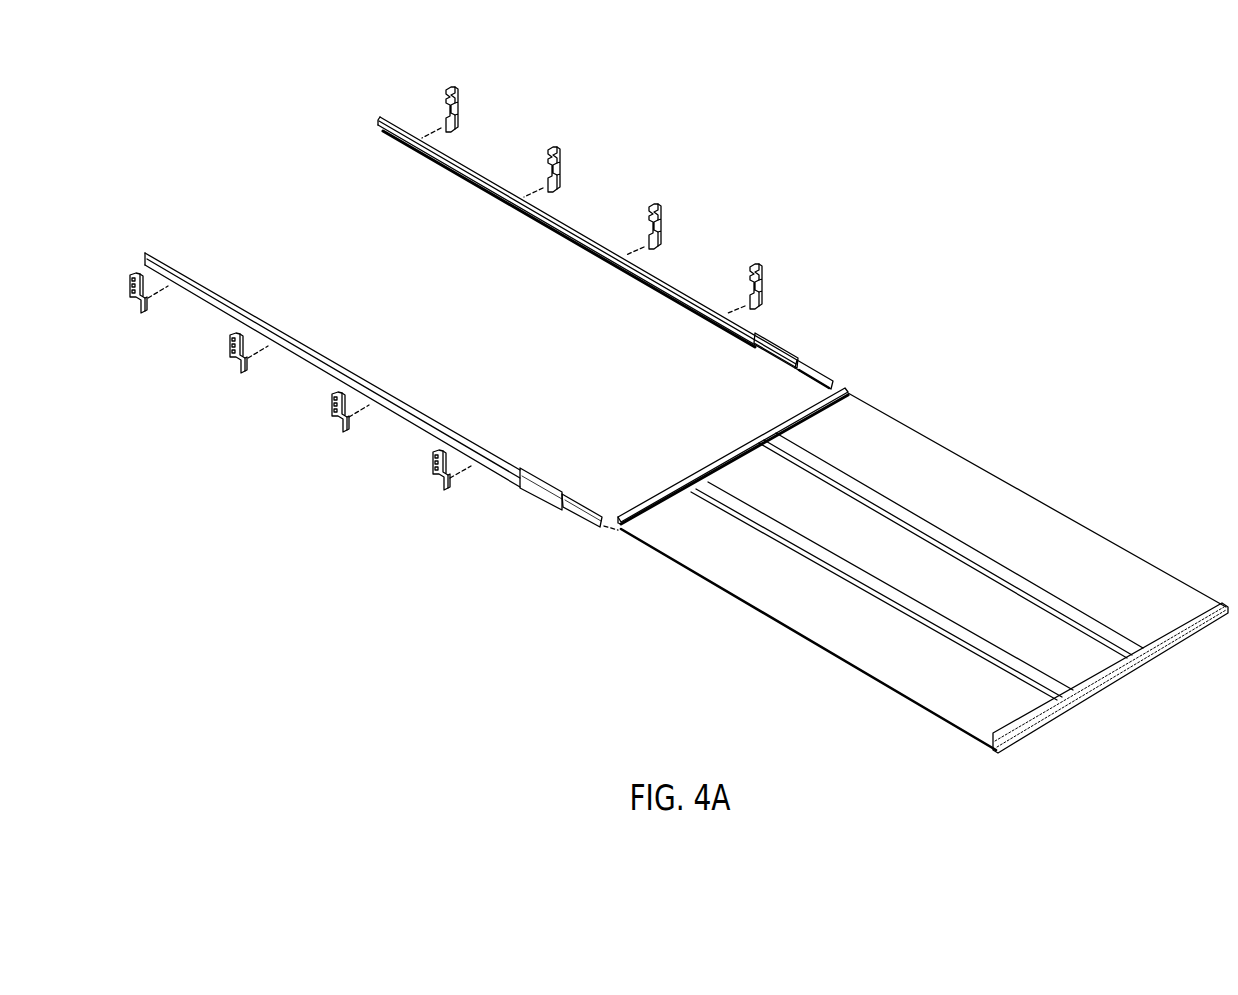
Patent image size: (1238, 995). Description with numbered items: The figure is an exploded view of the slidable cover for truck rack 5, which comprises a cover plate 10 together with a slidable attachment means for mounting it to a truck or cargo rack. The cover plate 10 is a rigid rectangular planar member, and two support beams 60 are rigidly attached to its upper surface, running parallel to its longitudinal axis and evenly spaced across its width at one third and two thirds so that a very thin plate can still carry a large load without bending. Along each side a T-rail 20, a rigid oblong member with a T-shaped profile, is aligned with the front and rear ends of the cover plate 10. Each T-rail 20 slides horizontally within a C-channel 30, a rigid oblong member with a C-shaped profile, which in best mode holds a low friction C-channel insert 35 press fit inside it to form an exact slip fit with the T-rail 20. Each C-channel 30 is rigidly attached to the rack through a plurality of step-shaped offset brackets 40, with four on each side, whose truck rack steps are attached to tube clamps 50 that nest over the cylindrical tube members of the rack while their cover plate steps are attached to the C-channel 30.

The slidable cover for truck rack 5 is at (903, 194).
The cover plate 10 is at (1010, 502).
The T-rail 20 is at (785, 367).
The C-channel 30 is at (478, 177).
The C-channel insert 35 is at (777, 347).
The offset bracket 40 is at (143, 312).
The tube clamp 50 is at (452, 87).
The support beam 60 is at (876, 495).